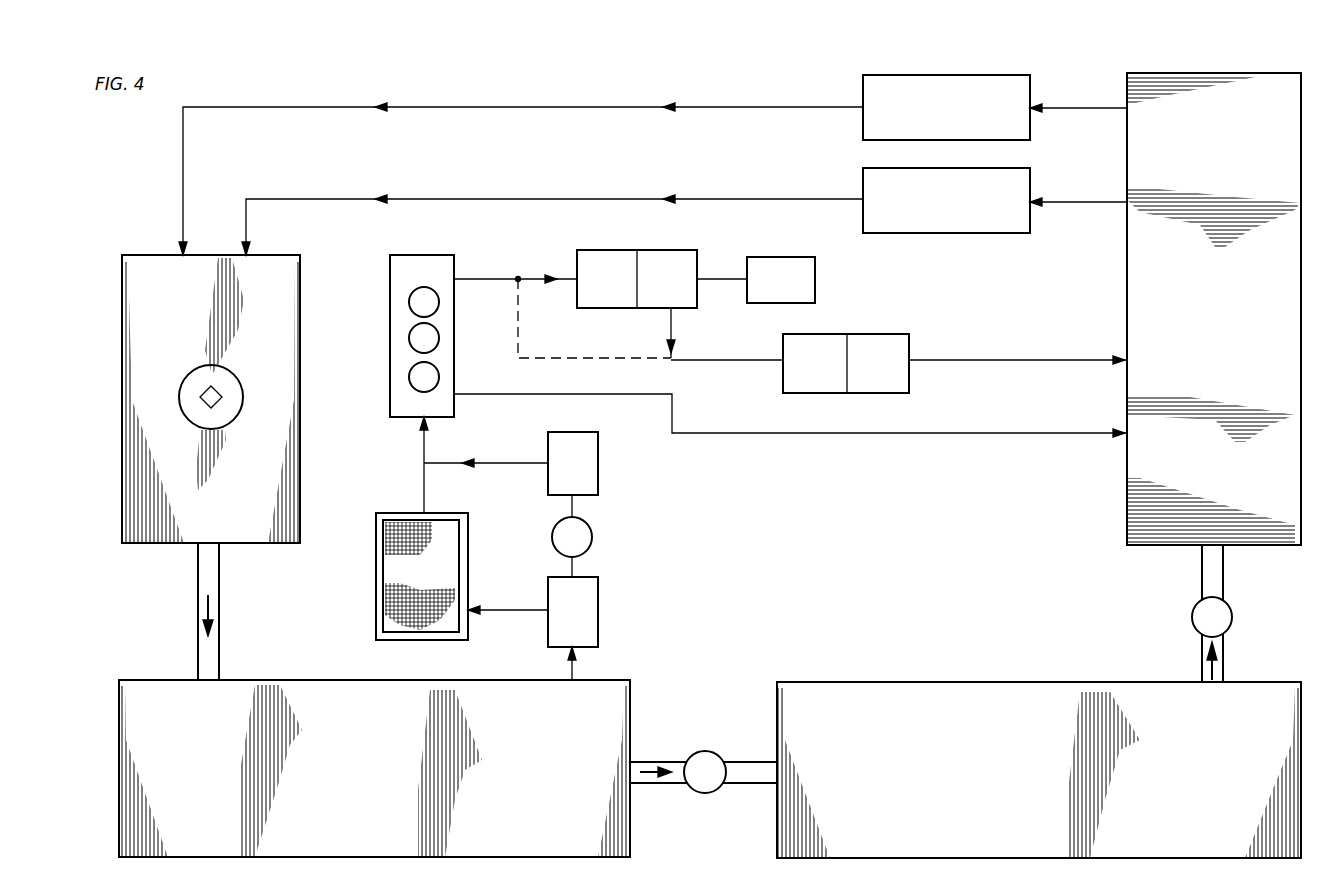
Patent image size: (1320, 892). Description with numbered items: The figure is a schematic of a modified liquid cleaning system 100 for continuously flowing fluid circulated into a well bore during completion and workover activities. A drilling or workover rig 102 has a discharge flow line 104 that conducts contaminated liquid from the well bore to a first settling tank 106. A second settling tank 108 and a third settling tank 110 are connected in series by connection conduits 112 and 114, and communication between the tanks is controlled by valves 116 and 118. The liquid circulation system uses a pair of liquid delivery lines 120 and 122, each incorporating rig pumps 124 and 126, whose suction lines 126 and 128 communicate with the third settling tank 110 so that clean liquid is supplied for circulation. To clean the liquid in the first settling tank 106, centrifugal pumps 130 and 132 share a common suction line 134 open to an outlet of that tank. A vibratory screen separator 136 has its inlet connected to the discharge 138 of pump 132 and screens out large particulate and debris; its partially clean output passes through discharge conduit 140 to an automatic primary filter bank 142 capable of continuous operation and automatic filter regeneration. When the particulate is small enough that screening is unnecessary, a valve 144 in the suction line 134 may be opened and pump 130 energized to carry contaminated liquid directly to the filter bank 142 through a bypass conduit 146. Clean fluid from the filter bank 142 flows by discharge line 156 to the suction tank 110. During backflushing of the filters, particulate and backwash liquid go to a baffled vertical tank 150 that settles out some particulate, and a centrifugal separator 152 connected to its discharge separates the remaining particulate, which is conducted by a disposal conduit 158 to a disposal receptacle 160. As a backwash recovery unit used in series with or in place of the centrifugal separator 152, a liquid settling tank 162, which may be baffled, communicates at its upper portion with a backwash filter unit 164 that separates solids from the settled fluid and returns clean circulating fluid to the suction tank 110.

The liquid cleaning system 100 is at (470, 72).
The drilling or workover rig 102 is at (128, 372).
The discharge flow line 104 is at (200, 580).
The first settling tank 106 is at (362, 782).
The second settling tank 108 is at (1010, 784).
The third settling tank 110 is at (1232, 306).
The connection conduit 112 is at (705, 748).
The connection conduit 114 is at (1205, 578).
The valve 116 is at (700, 795).
The valve 118 is at (1232, 617).
The liquid delivery line 120 is at (578, 107).
The liquid delivery line 122 is at (513, 199).
The rig pump 124 is at (975, 84).
The rig pump 126 is at (1080, 107).
The suction line 128 is at (1066, 203).
The centrifugal pump 130 is at (598, 478).
The centrifugal pump 132 is at (598, 623).
The common suction line 134 is at (575, 672).
The vibratory screen separator 136 is at (385, 597).
The discharge 138 is at (503, 612).
The discharge conduit 140 is at (424, 488).
The automatic primary filter bank 142 is at (390, 400).
The valve 144 is at (592, 540).
The bypass conduit 146 is at (495, 463).
The baffled vertical tank 150 is at (594, 308).
The centrifugal separator 152 is at (672, 250).
The discharge line 156 is at (893, 437).
The disposal conduit 158 is at (722, 279).
The disposal receptacle 160 is at (815, 292).
The liquid settling tank 162 is at (823, 393).
The backwash filter unit 164 is at (905, 355).